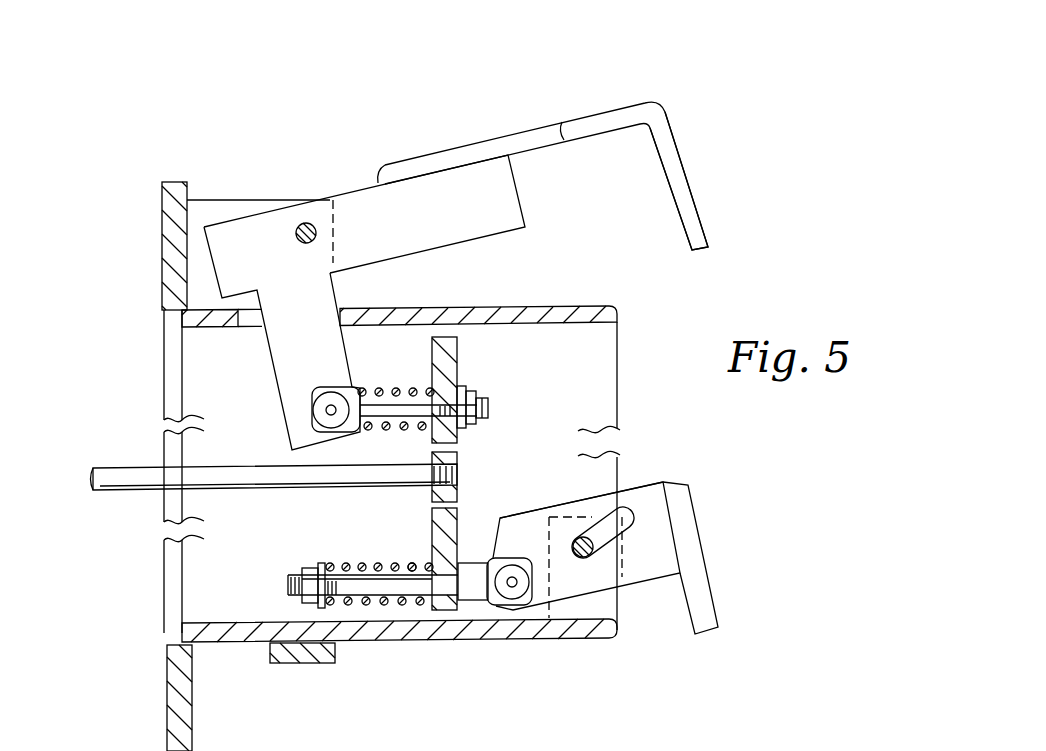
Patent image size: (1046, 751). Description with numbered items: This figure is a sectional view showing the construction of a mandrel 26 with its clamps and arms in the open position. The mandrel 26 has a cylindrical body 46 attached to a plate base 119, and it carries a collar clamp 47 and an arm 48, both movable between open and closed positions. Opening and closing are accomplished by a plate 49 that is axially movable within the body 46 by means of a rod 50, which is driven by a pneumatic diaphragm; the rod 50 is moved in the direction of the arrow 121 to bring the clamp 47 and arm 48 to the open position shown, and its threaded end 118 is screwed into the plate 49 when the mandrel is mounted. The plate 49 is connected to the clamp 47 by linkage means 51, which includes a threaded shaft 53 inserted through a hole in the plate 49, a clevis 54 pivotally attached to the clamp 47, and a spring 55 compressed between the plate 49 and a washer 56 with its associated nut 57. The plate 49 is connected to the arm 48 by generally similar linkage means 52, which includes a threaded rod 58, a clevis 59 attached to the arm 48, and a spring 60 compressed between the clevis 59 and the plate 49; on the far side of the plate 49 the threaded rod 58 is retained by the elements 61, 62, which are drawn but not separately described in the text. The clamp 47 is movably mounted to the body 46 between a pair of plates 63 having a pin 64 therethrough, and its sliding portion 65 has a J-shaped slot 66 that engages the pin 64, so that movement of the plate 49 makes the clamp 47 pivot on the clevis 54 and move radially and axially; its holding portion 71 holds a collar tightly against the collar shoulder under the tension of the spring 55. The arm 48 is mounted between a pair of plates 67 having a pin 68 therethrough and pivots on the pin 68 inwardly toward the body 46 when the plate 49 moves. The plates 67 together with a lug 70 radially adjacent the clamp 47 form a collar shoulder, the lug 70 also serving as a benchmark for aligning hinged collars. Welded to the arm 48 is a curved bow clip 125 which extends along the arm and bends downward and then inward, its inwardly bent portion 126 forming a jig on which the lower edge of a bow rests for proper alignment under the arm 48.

The mandrel 26 is at (731, 291).
The cylindrical body 46 is at (575, 304).
The collar clamp 47 is at (647, 482).
The arm 48 is at (525, 195).
The plate 49 is at (457, 338).
The rod 50 is at (220, 467).
The linkage means 51 is at (375, 550).
The linkage means 52 is at (378, 379).
The threaded shaft 53 is at (348, 575).
The clevis 54 is at (490, 558).
The spring 55 is at (415, 561).
The washer 56 is at (320, 563).
The nut 57 is at (302, 560).
The threaded rod 58 is at (488, 410).
The clevis 59 is at (342, 387).
The spring 60 is at (415, 385).
The nut 61 is at (477, 389).
The nut 62 is at (463, 387).
The plate 63 is at (623, 602).
The pin 64 is at (575, 558).
The sliding portion 65 is at (528, 512).
The J-shaped slot 66 is at (627, 522).
The plate 67 is at (233, 200).
The pin 68 is at (297, 235).
The lug 70 is at (303, 665).
The holding portion 71 is at (703, 593).
The threaded end 118 is at (467, 457).
The plate base 119 is at (169, 180).
The arrow 121 is at (77, 479).
The bow clip 125 is at (463, 142).
The inwardly bent portion 126 is at (697, 177).